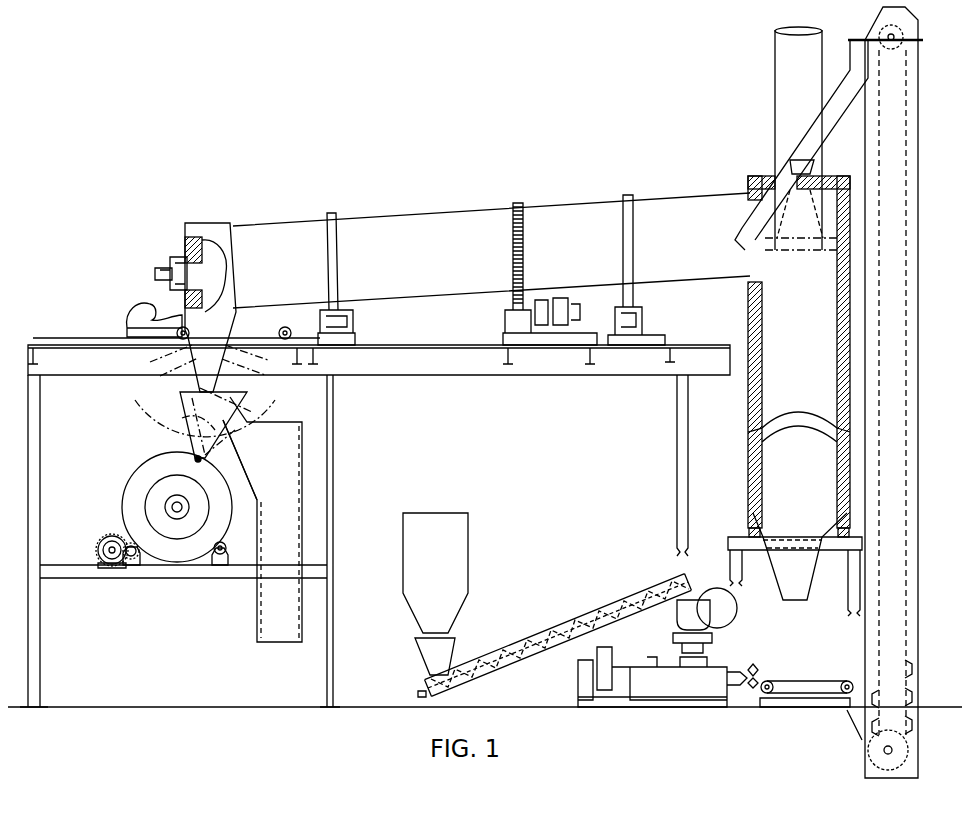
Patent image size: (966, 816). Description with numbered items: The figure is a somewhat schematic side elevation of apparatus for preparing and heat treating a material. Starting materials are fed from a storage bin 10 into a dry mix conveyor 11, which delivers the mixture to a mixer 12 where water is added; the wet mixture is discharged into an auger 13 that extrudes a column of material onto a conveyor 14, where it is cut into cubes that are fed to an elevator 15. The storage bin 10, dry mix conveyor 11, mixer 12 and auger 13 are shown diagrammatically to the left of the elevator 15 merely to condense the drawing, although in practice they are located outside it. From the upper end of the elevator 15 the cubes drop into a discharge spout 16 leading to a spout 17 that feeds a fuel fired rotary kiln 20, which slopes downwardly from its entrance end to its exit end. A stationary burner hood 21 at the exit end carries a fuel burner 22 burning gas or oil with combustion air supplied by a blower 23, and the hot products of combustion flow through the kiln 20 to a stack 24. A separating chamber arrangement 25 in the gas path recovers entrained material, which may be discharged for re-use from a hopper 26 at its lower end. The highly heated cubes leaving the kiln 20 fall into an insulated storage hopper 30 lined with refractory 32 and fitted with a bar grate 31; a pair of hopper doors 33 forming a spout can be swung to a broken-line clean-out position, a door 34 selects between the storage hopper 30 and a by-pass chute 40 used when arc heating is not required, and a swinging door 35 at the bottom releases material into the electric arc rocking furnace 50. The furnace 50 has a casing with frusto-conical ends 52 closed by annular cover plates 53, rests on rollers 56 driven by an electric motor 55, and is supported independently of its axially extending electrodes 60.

The storage bin 10 is at (457, 563).
The dry mix conveyor 11 is at (545, 630).
The mixer 12 is at (733, 618).
The auger 13 is at (677, 692).
The conveyor 14 is at (815, 684).
The elevator 15 is at (898, 462).
The discharge spout 16 is at (834, 104).
The spout 17 is at (790, 165).
The rotary kiln 20 is at (445, 216).
The burner hood 21 is at (205, 236).
The fuel burner 22 is at (165, 271).
The blower 23 is at (147, 308).
The stack 24 is at (790, 84).
The separating chamber arrangement 25 is at (758, 301).
The hopper 26 is at (795, 563).
The storage hopper 30 is at (185, 402).
The bar grate 31 is at (197, 427).
The refractory 32 is at (224, 442).
The hopper doors 33 is at (155, 362).
The door 34 is at (238, 410).
The swinging door 35 is at (196, 461).
The by-pass chute 40 is at (288, 446).
The electric arc rocking furnace 50 is at (158, 529).
The frusto-conical ends 52 is at (145, 469).
The annular cover plates 53 is at (152, 505).
The electric motor 55 is at (99, 548).
The rollers 56 is at (224, 545).
The electrodes 60 is at (178, 513).